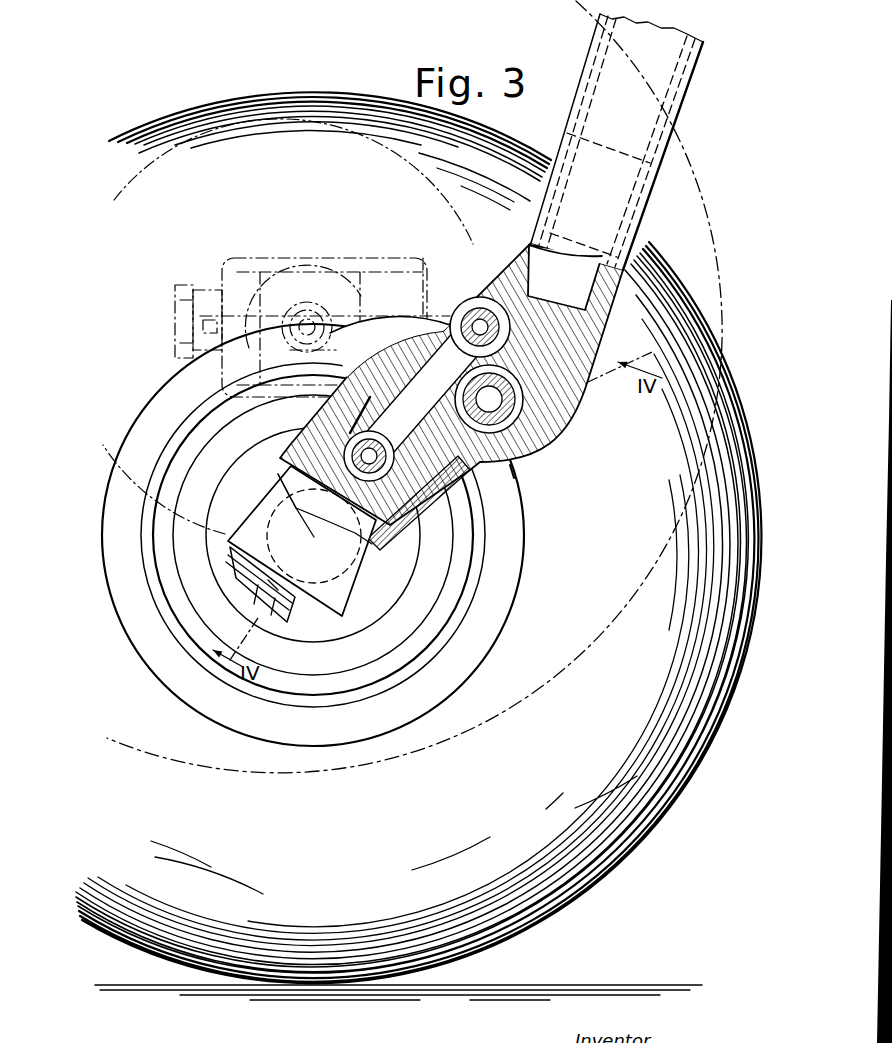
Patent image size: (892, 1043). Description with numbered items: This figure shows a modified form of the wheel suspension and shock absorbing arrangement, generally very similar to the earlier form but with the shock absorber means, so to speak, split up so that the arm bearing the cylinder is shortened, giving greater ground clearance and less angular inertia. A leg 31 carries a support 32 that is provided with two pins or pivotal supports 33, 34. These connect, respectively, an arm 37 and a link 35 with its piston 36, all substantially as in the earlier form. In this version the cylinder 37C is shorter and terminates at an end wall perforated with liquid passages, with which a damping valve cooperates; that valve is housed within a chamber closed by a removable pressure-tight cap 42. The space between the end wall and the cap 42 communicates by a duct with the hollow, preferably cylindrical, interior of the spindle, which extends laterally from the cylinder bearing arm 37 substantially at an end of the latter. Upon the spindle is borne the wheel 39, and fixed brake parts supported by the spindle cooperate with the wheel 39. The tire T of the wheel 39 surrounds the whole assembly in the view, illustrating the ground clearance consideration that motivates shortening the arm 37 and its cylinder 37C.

The leg 31 is at (672, 98).
The support 32 is at (596, 330).
The pin or pivotal support 33 is at (523, 435).
The pin or pivotal support 34 is at (482, 312).
The link 35 is at (445, 378).
The piston 36 is at (450, 490).
The arm 37 is at (392, 545).
The cylinder 37C is at (368, 557).
The wheel 39 is at (165, 660).
The removable pressure-tight cap 42 is at (287, 620).
The tire T is at (648, 798).